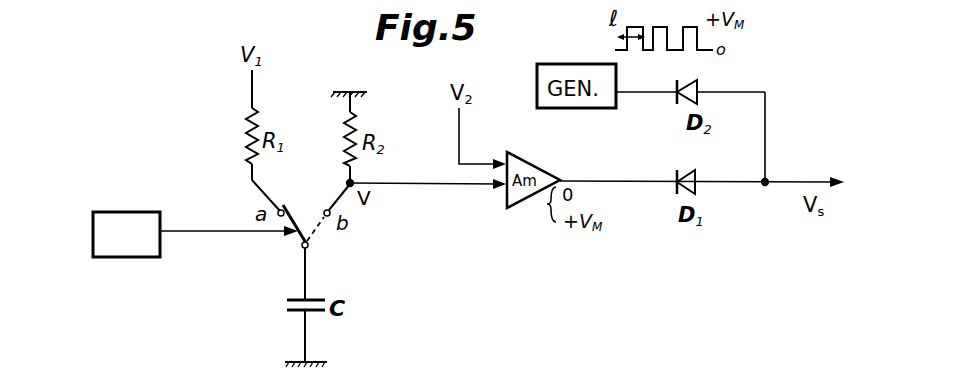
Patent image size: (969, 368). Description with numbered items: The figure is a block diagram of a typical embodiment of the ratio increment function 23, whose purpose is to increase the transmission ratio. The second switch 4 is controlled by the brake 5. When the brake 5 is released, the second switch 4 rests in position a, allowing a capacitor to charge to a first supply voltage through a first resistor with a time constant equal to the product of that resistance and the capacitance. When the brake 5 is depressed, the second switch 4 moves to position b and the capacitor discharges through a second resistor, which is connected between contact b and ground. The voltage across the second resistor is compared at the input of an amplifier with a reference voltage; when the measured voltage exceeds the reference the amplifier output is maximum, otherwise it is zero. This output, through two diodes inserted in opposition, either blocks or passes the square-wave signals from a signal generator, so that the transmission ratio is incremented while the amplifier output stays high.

The brake 5 is at (132, 212).
The second switch 4 is at (301, 248).
The ratio increment function 23 is at (444, 208).